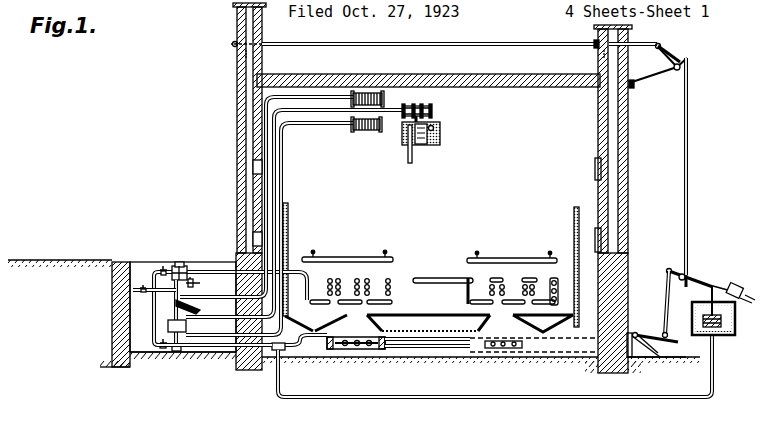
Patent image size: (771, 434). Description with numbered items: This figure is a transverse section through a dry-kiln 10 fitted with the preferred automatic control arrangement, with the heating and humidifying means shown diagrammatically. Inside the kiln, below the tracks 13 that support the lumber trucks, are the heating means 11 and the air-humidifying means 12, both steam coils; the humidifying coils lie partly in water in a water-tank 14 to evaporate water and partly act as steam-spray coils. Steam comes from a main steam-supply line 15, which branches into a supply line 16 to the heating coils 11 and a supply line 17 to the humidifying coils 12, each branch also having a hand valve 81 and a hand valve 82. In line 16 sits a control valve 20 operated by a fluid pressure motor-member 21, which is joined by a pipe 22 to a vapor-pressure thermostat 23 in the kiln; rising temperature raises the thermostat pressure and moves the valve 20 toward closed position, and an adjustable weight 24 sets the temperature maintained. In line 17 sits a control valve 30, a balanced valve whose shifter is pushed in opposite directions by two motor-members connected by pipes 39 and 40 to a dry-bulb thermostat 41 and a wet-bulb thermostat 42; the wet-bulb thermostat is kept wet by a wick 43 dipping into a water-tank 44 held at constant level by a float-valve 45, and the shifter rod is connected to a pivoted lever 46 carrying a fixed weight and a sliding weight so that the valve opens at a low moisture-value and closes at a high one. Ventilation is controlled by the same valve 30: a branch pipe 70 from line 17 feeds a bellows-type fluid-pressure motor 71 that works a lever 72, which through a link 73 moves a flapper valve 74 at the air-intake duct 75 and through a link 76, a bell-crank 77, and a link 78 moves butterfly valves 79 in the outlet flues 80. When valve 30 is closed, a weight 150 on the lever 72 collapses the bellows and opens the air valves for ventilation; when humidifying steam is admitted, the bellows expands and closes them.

The dry-kiln 10 is at (628, 259).
The heating means 11 is at (425, 277).
The air-humidifying means 12 is at (345, 337).
The tracks 13 is at (390, 255).
The water-tank 14 is at (375, 354).
The main steam-supply line 15 is at (118, 315).
The supply line 16 is at (196, 272).
The supply line 17 is at (222, 348).
The control valve 20 is at (177, 265).
The fluid pressure motor-member 21 is at (128, 320).
The pipe 22 is at (205, 297).
The vapor-pressure thermostat 23 is at (372, 93).
The adjustable weight 24 is at (190, 280).
The control valve 30 is at (176, 352).
The pipe 39 is at (200, 335).
The pipe 40 is at (200, 317).
The dry-bulb thermostat 41 is at (373, 131).
The wet-bulb thermostat 42 is at (432, 112).
The wick 43 is at (423, 101).
The water-tank 44 is at (437, 146).
The float-valve 45 is at (399, 159).
The lever 46 is at (128, 345).
The branch pipe 70 is at (512, 398).
The fluid-pressure motor 71 is at (735, 333).
The lever 72 is at (698, 272).
The link 73 is at (666, 313).
The flapper valve 74 is at (672, 340).
The air-intake duct 75 is at (650, 360).
The link 76 is at (689, 160).
The bell-crank 77 is at (680, 52).
The link 78 is at (485, 44).
The butterfly valves 79 is at (244, 70).
The outlet flues 80 is at (629, 162).
The hand valve 81 is at (163, 268).
The hand valve 82 is at (162, 350).
The weight 150 is at (746, 290).